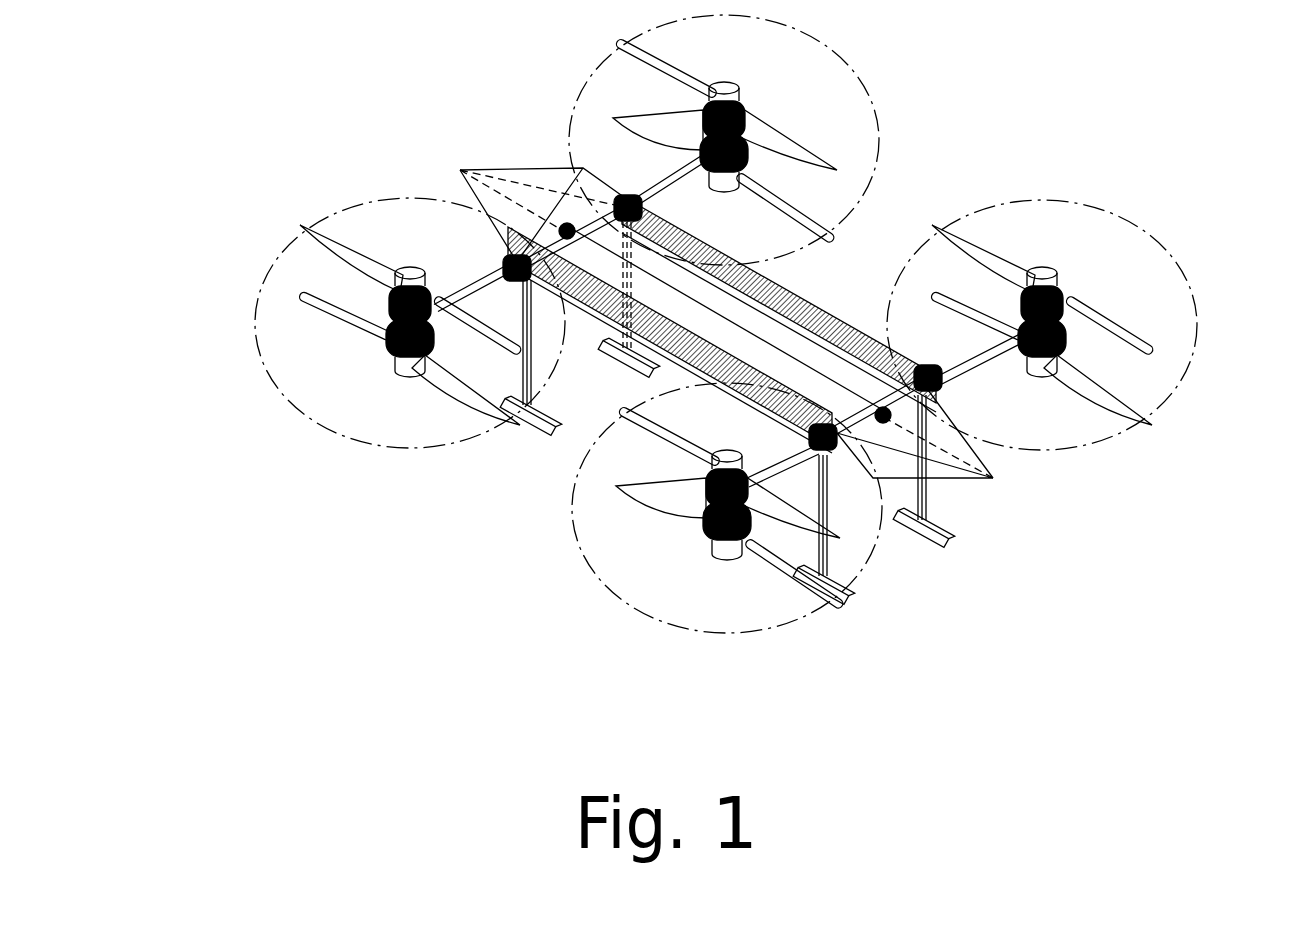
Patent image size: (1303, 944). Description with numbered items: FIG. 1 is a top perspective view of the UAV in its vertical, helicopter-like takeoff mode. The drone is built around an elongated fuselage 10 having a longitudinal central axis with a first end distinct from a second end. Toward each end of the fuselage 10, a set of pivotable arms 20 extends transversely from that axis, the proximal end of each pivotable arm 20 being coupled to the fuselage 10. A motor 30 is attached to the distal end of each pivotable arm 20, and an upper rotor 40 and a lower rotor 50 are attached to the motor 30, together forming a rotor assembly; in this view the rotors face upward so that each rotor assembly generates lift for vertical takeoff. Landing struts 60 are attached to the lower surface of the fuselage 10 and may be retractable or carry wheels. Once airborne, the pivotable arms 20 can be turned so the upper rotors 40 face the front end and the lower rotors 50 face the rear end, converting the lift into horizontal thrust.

The fuselage 10 is at (778, 292).
The pivotable arm 20 is at (628, 150).
The motor 30 is at (1065, 303).
The upper rotor 40 is at (333, 247).
The lower rotor 50 is at (470, 397).
The landing strut 60 is at (937, 548).